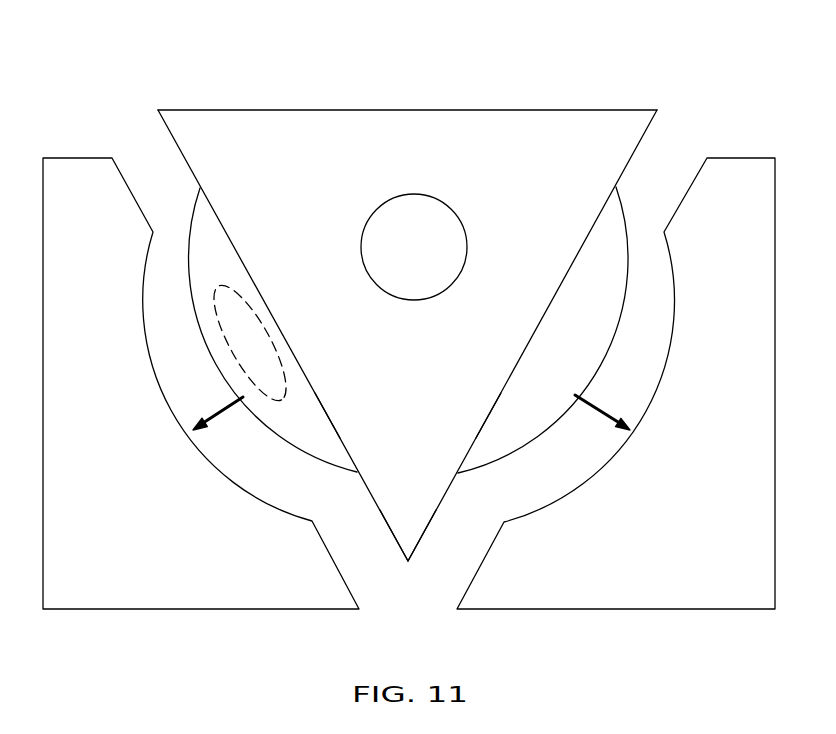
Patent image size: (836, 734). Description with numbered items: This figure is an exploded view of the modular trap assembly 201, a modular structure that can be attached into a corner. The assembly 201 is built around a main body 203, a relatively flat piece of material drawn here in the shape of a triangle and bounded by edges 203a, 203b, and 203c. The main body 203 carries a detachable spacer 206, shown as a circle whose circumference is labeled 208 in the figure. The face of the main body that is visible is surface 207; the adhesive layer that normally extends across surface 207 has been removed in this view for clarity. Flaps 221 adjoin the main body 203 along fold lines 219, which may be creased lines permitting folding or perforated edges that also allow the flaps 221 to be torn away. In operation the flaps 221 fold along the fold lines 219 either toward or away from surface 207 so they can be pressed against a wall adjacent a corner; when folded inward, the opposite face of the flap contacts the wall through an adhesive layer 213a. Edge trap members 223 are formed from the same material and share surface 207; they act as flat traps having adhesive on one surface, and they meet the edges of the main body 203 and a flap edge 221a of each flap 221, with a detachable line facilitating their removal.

The modular trap assembly 201 is at (223, 64).
The main body 203 is at (407, 319).
The edge of main body 203a is at (177, 140).
The edge of main body 203b is at (638, 140).
The edge of main body 203c is at (307, 110).
The spacer 206 is at (438, 245).
The opening edge 208 is at (455, 208).
The surface 207 is at (397, 490).
The adhesive layer 213a is at (265, 332).
The fold line 219 is at (330, 417).
The flap 221 is at (278, 428).
The flap edge 221a is at (202, 318).
The edge trap member 223 is at (147, 540).